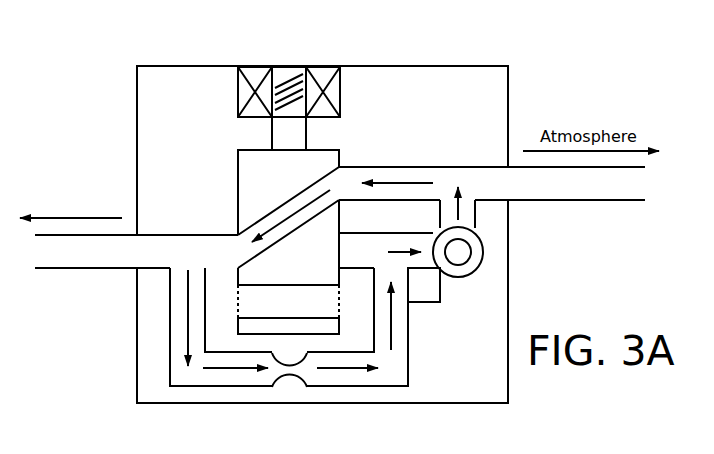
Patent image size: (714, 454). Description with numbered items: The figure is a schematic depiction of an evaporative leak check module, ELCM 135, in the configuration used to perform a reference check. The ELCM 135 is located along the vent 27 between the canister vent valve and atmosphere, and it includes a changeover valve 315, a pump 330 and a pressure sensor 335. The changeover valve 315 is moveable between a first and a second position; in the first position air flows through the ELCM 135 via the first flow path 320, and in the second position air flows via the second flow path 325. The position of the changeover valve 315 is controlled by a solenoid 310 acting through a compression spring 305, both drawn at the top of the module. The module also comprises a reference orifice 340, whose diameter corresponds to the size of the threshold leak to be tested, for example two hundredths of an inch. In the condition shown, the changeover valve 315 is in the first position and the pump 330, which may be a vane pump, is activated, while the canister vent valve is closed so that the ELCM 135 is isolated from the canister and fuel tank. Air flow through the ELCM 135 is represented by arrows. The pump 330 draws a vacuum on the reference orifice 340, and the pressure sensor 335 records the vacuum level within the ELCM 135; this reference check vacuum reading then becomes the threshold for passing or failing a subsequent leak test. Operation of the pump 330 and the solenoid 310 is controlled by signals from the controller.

The evaporative leak check module 135 is at (173, 66).
The vent 27 is at (88, 268).
The compression spring 305 is at (291, 66).
The solenoid 310 is at (321, 66).
The changeover valve 315 is at (248, 150).
The first flow path 320 is at (293, 195).
The second flow path 325 is at (332, 285).
The pump 330 is at (478, 270).
The pressure sensor 335 is at (442, 300).
The reference orifice 340 is at (302, 373).